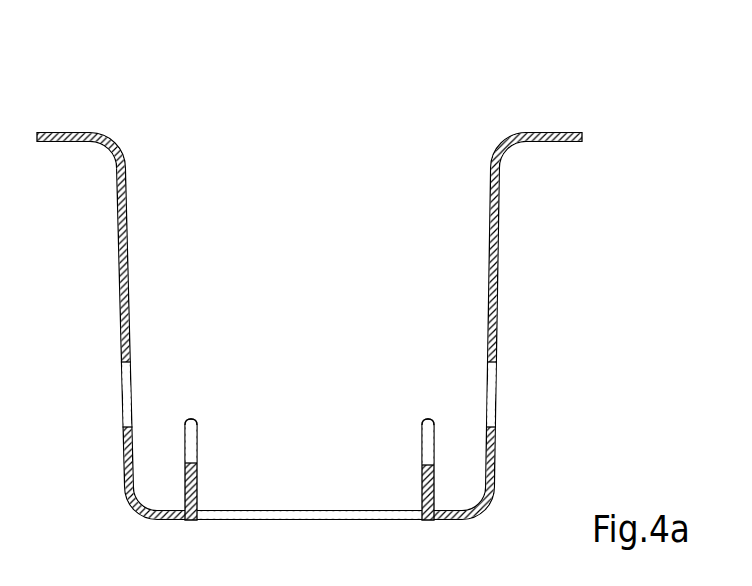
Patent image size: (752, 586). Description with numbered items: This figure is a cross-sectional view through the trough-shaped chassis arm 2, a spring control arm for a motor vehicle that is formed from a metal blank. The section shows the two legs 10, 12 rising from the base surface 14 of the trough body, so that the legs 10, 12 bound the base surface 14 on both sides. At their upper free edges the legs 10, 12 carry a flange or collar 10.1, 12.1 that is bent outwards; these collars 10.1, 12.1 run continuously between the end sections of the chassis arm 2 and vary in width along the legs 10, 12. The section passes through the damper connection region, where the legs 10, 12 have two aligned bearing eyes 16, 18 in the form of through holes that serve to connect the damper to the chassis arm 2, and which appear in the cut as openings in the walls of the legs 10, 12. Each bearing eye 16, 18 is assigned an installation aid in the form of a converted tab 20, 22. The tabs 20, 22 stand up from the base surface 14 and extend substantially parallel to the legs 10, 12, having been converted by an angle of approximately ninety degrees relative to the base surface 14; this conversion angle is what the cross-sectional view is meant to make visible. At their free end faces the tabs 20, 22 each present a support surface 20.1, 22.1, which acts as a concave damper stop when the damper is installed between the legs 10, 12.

The chassis arm 2 is at (353, 260).
The leg 10 is at (108, 293).
The collar 10.1 is at (68, 132).
The leg 12 is at (508, 288).
The collar 12.1 is at (548, 132).
The base surface 14 is at (303, 510).
The bearing eye 16 is at (128, 393).
The bearing eye 18 is at (490, 393).
The tab 20 is at (154, 433).
The support surface 20.1 is at (190, 445).
The tab 22 is at (466, 433).
The support surface 22.1 is at (428, 442).